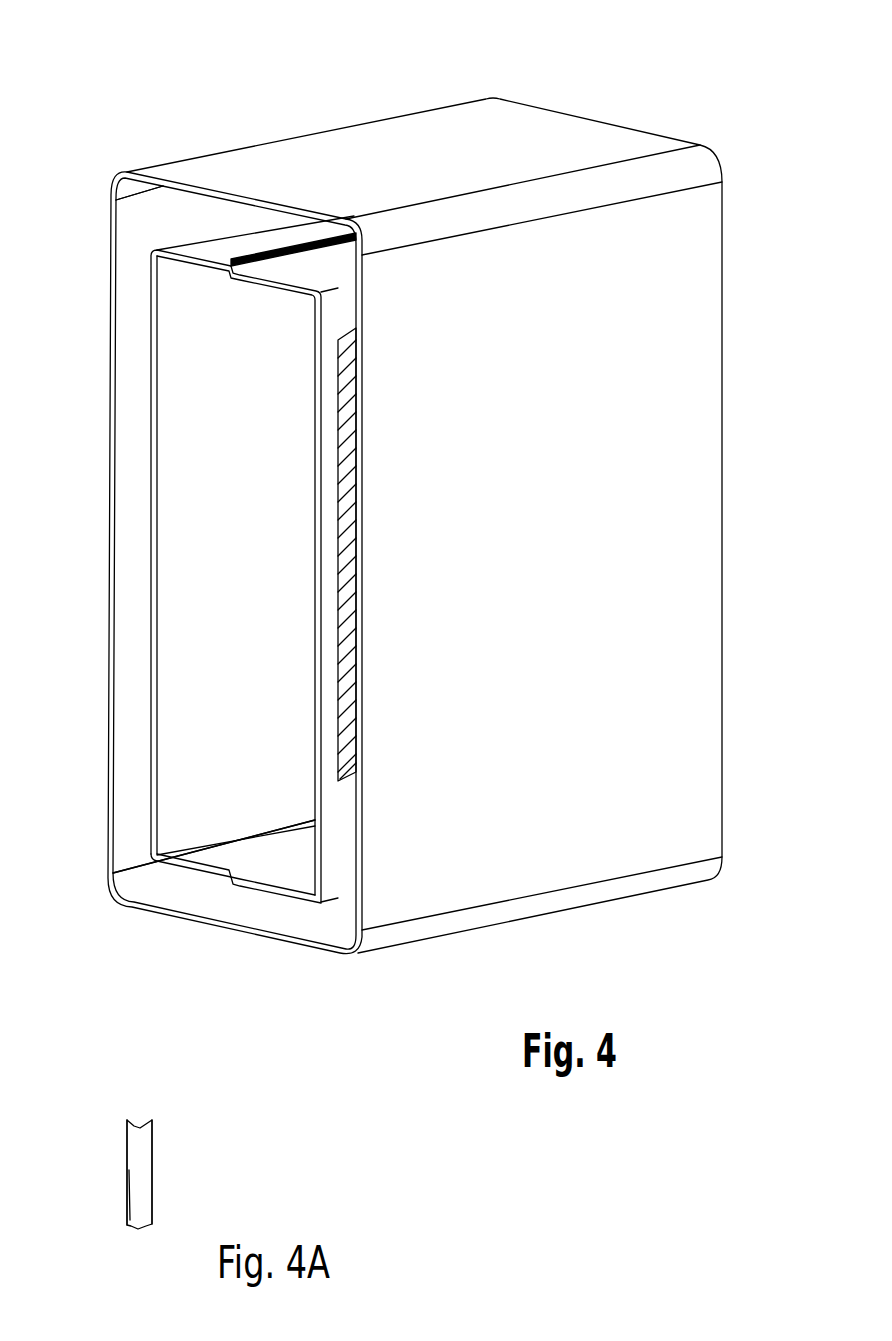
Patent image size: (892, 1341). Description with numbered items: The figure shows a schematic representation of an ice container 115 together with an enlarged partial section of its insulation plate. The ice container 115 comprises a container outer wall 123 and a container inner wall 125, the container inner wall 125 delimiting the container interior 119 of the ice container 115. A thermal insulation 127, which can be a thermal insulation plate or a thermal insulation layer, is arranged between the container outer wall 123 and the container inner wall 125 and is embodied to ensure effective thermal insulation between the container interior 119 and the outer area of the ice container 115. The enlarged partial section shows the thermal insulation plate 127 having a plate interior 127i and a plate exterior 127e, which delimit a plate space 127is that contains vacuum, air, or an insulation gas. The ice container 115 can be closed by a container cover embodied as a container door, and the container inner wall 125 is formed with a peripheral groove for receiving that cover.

In FIG. 4, the ice container 115 is at (430, 481).
In FIG. 4, the container interior 119 is at (213, 727).
In FIG. 4, the container outer wall 123 is at (672, 390).
In FIG. 4, the container inner wall 125 is at (187, 585).
In FIG. 4, the thermal insulation 127 is at (348, 330).
In FIG. 4A, the thermal insulation 127 is at (170, 1105).
In FIG. 4A, the plate interior 127i is at (127, 1148).
In FIG. 4A, the plate exterior 127e is at (152, 1176).
In FIG. 4A, the plate space 127is is at (145, 1193).